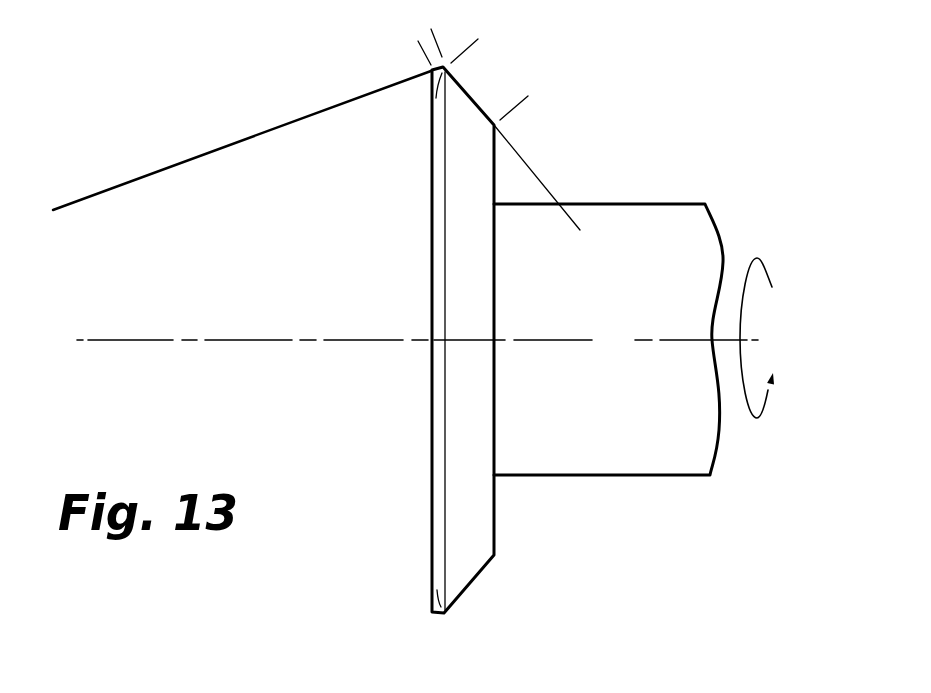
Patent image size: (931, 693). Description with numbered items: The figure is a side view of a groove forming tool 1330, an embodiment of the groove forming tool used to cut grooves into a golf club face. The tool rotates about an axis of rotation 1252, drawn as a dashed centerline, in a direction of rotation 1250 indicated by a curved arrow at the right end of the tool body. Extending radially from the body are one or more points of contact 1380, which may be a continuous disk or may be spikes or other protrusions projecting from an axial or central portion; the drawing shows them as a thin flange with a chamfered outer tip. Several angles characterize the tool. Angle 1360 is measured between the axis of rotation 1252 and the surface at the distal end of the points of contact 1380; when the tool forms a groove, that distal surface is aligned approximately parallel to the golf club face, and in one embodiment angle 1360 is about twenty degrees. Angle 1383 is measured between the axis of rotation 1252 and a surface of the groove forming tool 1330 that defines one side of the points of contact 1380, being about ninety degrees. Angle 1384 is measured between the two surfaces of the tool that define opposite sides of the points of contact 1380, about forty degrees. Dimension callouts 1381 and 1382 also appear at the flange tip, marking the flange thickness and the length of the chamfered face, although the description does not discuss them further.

The direction of rotation 1250 is at (757, 420).
The axis of rotation 1252 is at (262, 341).
The groove forming tool 1330 is at (620, 222).
The angle 1360 is at (85, 205).
The points of contact 1380 is at (431, 103).
The flange thickness 1381 is at (463, 23).
The chamfer length 1382 is at (478, 47).
The angle 1383 is at (422, 277).
The angle 1384 is at (442, 263).